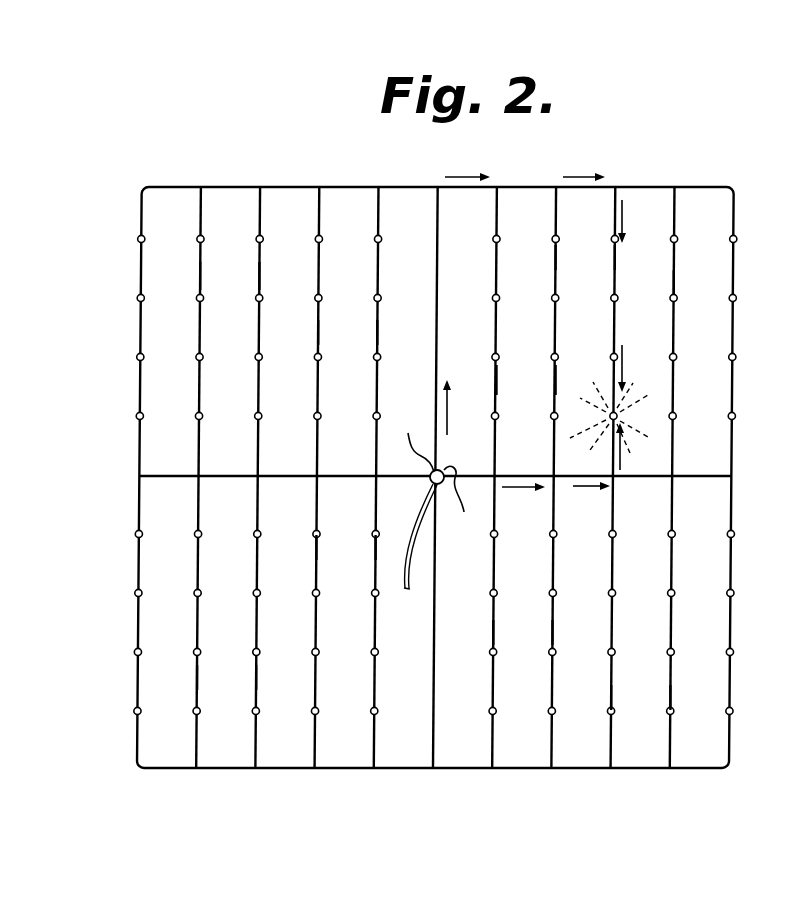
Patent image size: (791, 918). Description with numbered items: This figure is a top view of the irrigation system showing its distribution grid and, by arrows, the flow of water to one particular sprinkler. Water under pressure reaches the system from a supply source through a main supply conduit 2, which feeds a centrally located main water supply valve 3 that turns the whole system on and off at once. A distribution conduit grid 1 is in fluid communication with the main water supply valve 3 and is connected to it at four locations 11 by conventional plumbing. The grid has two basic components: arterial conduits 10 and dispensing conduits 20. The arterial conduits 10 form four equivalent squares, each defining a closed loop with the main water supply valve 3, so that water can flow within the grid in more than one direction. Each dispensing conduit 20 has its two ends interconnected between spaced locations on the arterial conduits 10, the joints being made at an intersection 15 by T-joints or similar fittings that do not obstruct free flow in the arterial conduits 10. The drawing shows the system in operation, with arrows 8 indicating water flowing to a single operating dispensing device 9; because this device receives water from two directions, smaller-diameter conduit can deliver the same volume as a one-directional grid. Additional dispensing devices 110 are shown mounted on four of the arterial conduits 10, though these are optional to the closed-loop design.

The distribution conduit grid 1 is at (371, 158).
The main supply conduit 2 is at (418, 577).
The main water supply valve 3 is at (430, 476).
The arrows 8 is at (470, 175).
The dispensing device 9 is at (608, 418).
The arterial conduits 10 is at (210, 187).
The locations 11 is at (433, 473).
The intersection 15 is at (203, 187).
The dispensing conduits 20 is at (259, 273).
The dispensing devices 110 is at (197, 239).